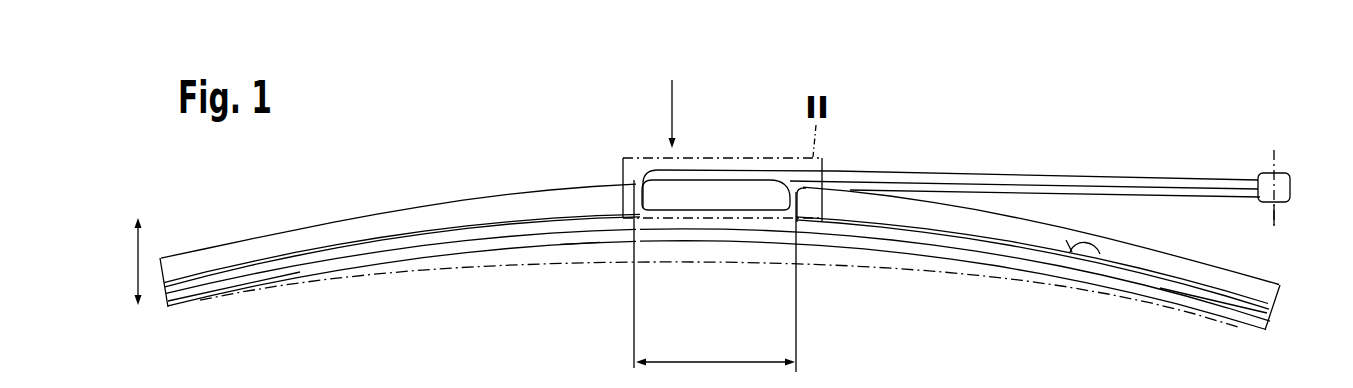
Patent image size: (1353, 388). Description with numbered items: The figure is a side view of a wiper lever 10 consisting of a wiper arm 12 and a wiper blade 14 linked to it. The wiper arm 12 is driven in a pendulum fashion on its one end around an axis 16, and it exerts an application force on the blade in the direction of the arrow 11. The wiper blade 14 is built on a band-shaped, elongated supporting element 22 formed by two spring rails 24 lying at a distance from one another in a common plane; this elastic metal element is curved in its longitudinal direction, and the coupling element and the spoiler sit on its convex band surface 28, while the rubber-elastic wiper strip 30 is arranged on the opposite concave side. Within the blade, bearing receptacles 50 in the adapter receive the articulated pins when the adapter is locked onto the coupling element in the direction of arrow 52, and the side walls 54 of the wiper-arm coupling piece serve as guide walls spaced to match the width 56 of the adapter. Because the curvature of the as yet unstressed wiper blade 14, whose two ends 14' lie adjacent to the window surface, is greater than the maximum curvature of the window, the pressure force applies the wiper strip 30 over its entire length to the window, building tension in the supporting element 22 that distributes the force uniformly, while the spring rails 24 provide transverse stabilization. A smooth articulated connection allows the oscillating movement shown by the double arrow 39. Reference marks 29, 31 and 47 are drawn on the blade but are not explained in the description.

The wiper lever 10 is at (600, 164).
The arrow 11 is at (1268, 160).
The wiper arm 12 is at (994, 175).
The wiper blade 14 is at (739, 149).
The ends of the wiper blade 14' is at (744, 259).
The axis 16 is at (578, 250).
The supporting element 22 is at (672, 105).
The spring rails 24 is at (873, 246).
The band surface 28 is at (644, 264).
The spring rail end 29 is at (1082, 254).
The wiper strip 30 is at (1013, 246).
The spring rail 31 is at (1126, 275).
The double arrow 39 is at (135, 262).
The connector 47 is at (745, 193).
The bearing receptacles 50 is at (541, 177).
The arrow 52 is at (476, 215).
The side walls 54 is at (715, 346).
The width 56 is at (715, 284).